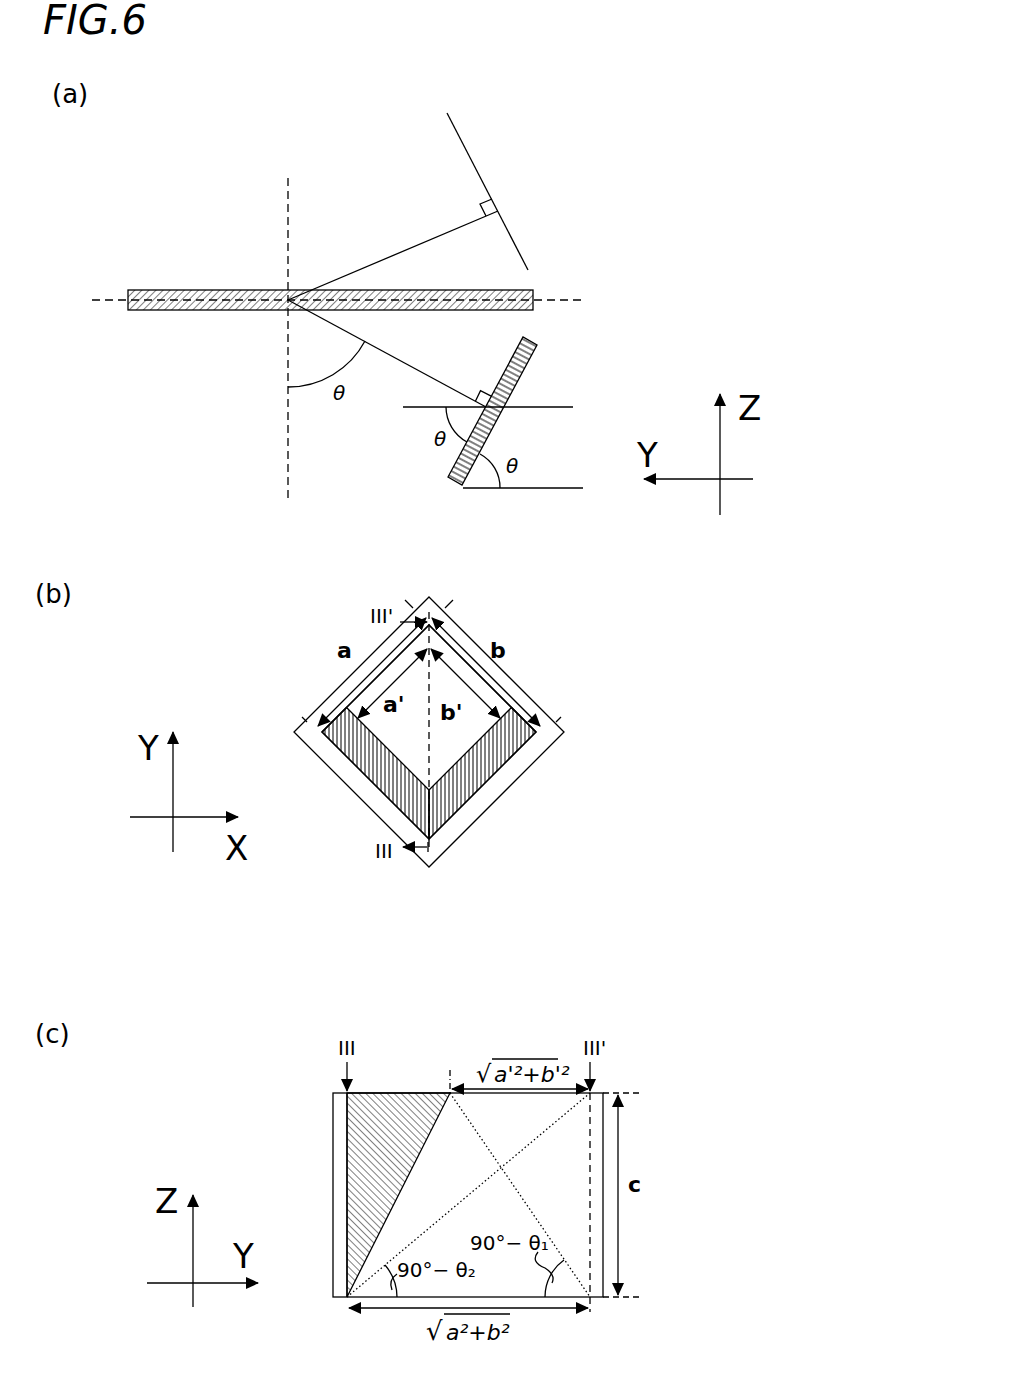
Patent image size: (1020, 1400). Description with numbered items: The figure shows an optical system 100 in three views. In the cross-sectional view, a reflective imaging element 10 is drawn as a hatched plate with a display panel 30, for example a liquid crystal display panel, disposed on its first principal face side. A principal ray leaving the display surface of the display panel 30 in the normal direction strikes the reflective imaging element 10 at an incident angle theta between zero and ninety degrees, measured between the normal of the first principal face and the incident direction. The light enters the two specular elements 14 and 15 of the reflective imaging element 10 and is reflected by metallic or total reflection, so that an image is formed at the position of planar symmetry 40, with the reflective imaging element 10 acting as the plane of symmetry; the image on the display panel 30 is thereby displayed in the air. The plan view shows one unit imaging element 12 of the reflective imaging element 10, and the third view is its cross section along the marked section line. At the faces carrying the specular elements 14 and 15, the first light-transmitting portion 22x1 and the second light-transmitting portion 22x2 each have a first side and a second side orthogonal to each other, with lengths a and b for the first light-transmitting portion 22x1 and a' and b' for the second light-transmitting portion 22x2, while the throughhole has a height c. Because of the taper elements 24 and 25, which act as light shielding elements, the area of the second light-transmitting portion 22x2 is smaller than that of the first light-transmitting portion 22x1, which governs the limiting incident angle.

The optical system 100 is at (704, 157).
The reflective imaging element 10 is at (222, 303).
The unit imaging element 12 is at (630, 699).
The specular element 14 is at (374, 684).
The specular element 15 is at (497, 690).
The taper element 24 is at (397, 790).
The taper element 25 is at (476, 782).
The display panel 30 is at (533, 356).
The position of planar symmetry 40 is at (455, 118).
The first light-transmitting portion 22x1 is at (572, 1097).
The second light-transmitting portion 22x2 is at (582, 1297).